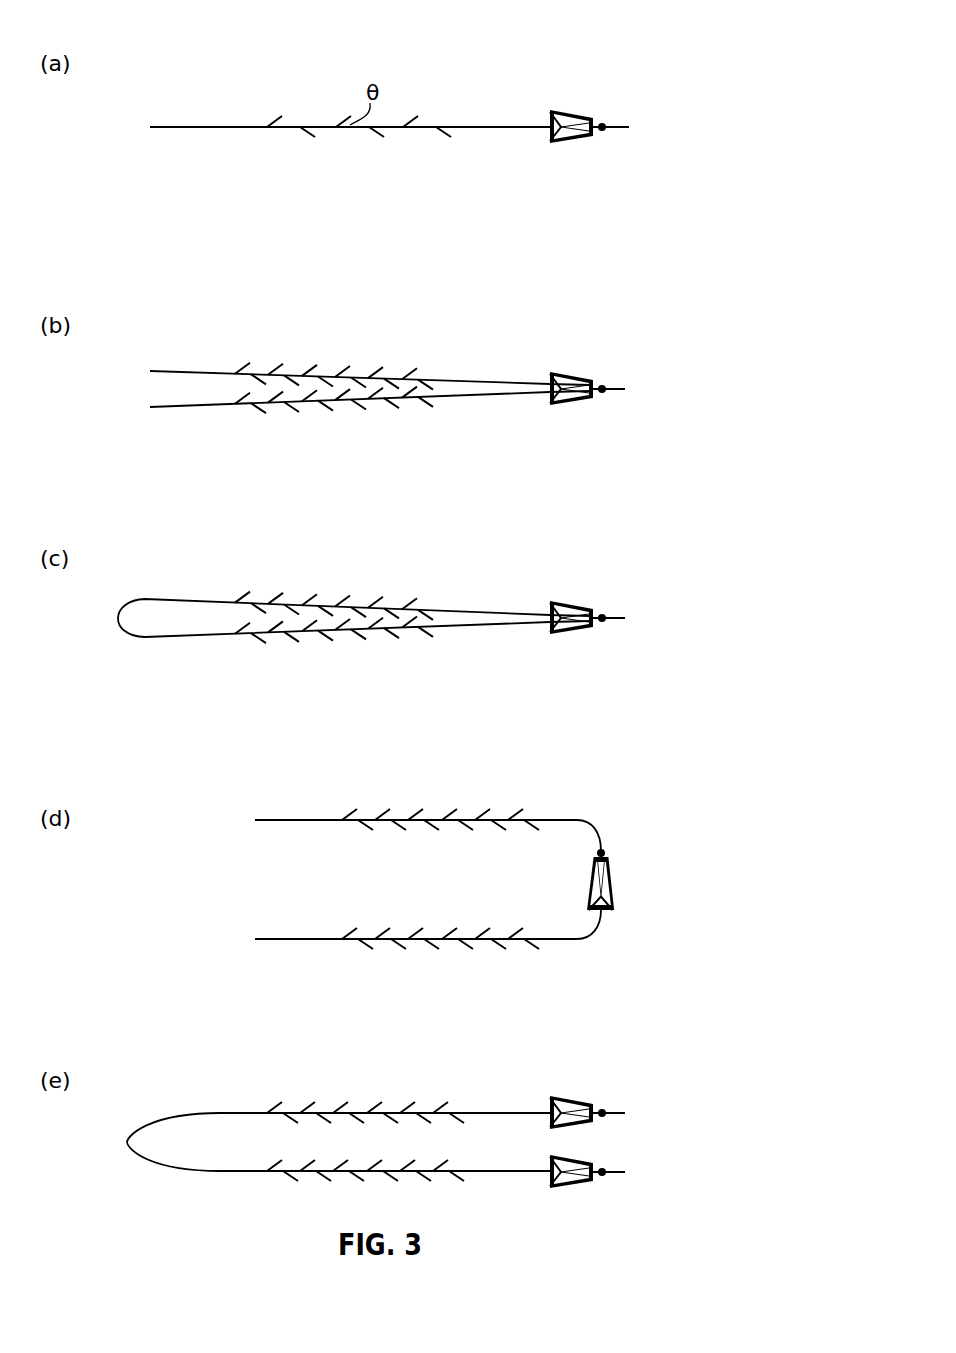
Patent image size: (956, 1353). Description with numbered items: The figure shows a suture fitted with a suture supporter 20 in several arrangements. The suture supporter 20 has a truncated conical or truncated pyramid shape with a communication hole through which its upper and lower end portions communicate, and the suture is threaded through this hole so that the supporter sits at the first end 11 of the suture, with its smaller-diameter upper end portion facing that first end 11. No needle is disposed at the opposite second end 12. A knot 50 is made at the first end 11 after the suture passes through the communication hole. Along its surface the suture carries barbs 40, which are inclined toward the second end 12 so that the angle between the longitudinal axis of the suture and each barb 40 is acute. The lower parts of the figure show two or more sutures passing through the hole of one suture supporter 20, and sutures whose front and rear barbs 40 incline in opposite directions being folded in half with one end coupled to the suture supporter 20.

The first end 11 is at (635, 126).
The second end 12 is at (143, 125).
The suture supporter 20 is at (570, 148).
The barb 40 is at (341, 372).
The knot 50 is at (604, 122).